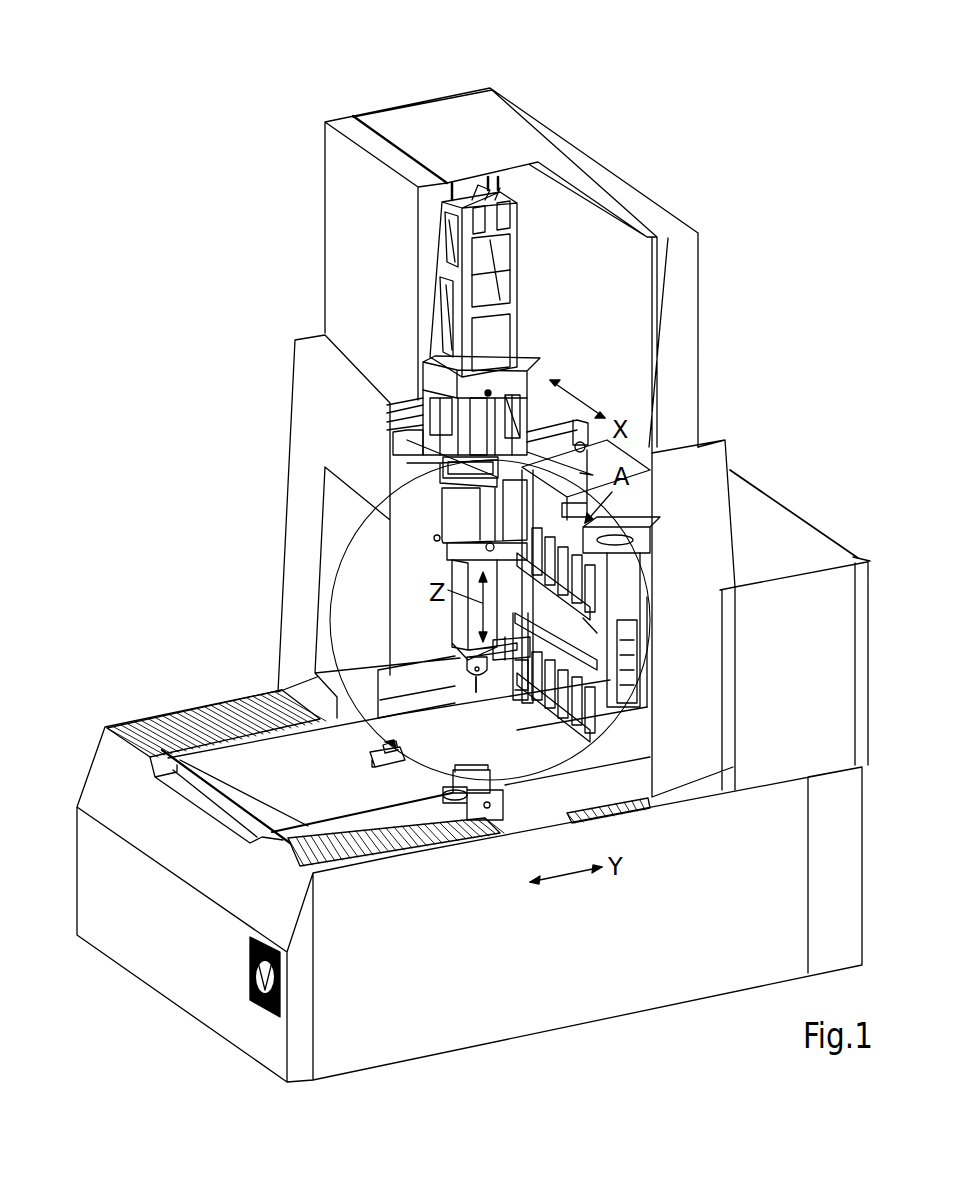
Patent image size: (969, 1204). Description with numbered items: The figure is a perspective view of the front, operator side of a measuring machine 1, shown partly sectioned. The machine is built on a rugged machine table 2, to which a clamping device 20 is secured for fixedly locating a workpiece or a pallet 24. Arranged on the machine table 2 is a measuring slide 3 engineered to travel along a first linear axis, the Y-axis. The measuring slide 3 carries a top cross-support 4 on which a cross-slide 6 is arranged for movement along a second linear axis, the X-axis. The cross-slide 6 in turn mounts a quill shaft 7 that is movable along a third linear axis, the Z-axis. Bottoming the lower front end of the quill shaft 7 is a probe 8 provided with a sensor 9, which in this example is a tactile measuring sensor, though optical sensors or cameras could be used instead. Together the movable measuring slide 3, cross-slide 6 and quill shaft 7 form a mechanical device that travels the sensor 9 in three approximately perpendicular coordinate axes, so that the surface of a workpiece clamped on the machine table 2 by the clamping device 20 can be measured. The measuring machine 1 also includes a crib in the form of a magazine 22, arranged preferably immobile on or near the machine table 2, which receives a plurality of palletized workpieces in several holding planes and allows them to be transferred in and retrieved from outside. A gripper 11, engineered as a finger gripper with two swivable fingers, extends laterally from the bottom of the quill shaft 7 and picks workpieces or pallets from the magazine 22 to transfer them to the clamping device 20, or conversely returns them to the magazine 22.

The measuring machine 1 is at (585, 79).
The machine table 2 is at (278, 793).
The measuring slide 3 is at (293, 591).
The top cross-support 4 is at (422, 505).
The cross-slide 6 is at (398, 453).
The quill shaft 7 is at (462, 622).
The probe 8 is at (461, 673).
The sensor 9 is at (477, 690).
The gripper 11 is at (503, 664).
The clamping device 20 is at (372, 767).
The magazine 22 is at (607, 687).
The pallet 24 is at (854, 541).